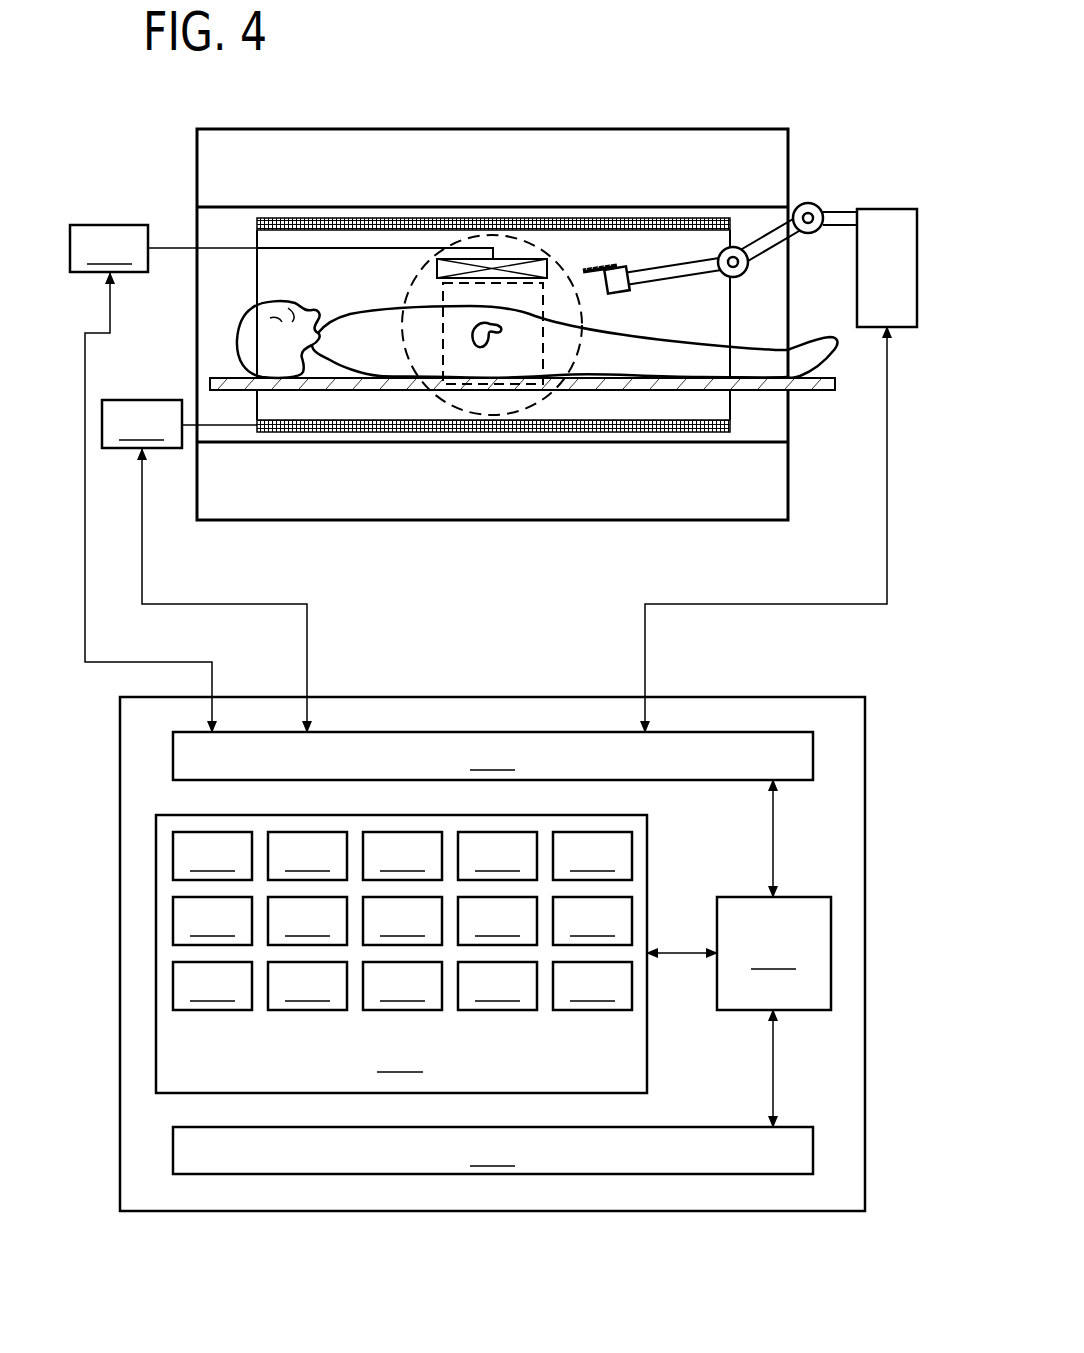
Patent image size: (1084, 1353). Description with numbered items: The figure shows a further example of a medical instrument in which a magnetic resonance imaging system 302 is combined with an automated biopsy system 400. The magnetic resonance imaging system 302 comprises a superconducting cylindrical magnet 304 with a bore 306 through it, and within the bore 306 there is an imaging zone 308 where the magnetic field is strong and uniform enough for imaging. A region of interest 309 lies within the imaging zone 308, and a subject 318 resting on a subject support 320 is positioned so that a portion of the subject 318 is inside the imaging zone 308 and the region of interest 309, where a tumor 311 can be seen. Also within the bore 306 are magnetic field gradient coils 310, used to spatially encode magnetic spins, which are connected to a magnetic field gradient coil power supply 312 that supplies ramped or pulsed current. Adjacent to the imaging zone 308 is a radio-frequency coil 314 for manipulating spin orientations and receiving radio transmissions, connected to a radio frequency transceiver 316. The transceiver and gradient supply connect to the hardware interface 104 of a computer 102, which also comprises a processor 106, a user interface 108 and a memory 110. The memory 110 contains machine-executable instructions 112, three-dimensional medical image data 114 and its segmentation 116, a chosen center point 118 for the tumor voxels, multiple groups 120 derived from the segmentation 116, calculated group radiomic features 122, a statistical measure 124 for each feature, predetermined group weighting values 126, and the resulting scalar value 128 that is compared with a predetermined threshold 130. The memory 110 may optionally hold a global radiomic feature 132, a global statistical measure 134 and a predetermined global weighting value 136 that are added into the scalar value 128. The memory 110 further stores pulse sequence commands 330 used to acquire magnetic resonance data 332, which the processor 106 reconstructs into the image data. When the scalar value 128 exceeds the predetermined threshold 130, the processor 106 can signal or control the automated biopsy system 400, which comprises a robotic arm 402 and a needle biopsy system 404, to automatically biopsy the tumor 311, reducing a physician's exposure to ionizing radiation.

The computer 102 is at (422, 697).
The hardware interface 104 is at (493, 756).
The processor 106 is at (739, 953).
The user interface 108 is at (493, 1150).
The memory 110 is at (401, 954).
The machine-executable instructions 112 is at (212, 856).
The three-dimensional medical image data 114 is at (307, 856).
The segmentation 116 is at (402, 856).
The center point 118 is at (497, 856).
The multiple groups 120 is at (592, 856).
The calculated group radiomic features 122 is at (212, 921).
The statistical measure 124 is at (307, 921).
The predetermined group weighting value 126 is at (402, 921).
The scalar value 128 is at (497, 921).
The predetermined threshold 130 is at (592, 921).
The global radiomic feature 132 is at (212, 986).
The global statistical measure 134 is at (307, 986).
The predetermined global weighting value 136 is at (402, 986).
The magnetic resonance imaging system 302 is at (500, 376).
The magnet 304 is at (788, 152).
The bore 306 is at (276, 271).
The imaging zone 308 is at (405, 295).
The region of interest 309 is at (443, 345).
The magnetic field gradient coils 310 is at (204, 566).
The tumor 311 is at (487, 347).
The magnetic field gradient coil power supply 312 is at (367, 218).
The radio-frequency coil 314 is at (513, 259).
The radio frequency transceiver 316 is at (163, 478).
The subject 318 is at (237, 337).
The subject support 320 is at (225, 383).
The pulse sequence commands 330 is at (497, 986).
The magnetic resonance data 332 is at (592, 986).
The automated biopsy system 400 is at (492, 965).
The robotic arm 402 is at (895, 195).
The needle biopsy system 404 is at (589, 262).